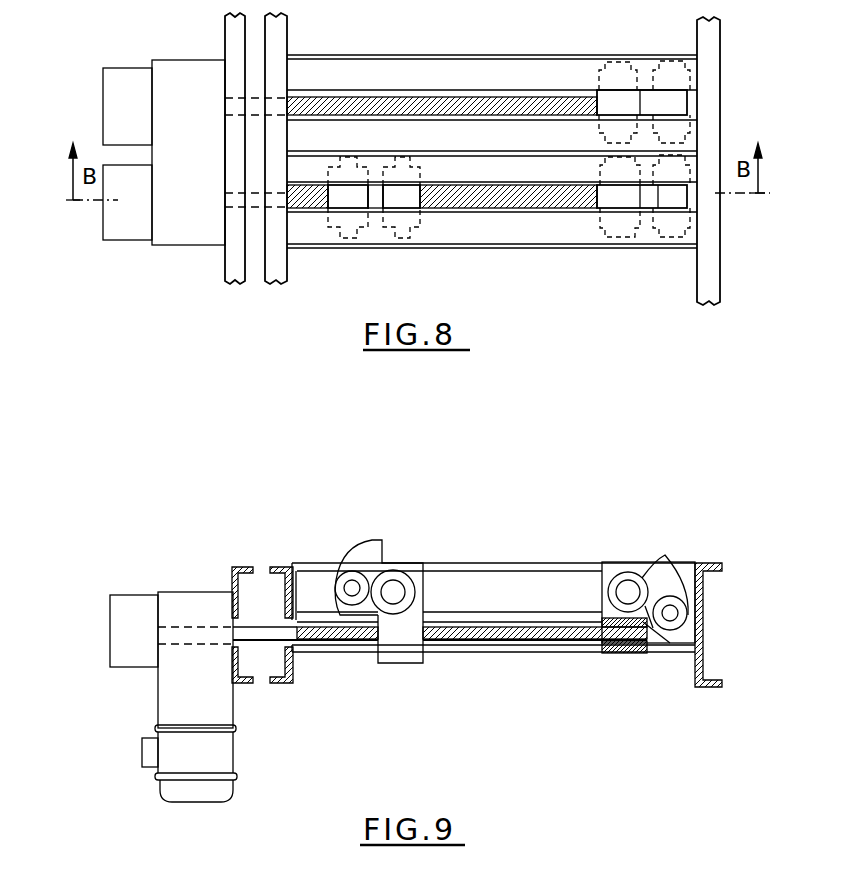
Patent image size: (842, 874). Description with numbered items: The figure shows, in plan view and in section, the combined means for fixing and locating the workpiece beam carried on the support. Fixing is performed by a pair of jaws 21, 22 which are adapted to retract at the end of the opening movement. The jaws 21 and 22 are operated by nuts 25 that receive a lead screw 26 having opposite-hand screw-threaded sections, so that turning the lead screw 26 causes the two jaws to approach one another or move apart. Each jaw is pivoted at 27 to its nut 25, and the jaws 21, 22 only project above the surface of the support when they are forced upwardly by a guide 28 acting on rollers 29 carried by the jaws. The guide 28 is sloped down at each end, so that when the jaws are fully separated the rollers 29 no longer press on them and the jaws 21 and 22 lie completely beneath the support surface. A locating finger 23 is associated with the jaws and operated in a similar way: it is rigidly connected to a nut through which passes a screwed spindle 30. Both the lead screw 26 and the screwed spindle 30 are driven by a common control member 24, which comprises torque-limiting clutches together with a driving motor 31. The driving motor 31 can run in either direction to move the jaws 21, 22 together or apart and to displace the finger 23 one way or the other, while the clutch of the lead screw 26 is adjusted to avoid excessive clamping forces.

In FIG. 8, the jaw 21 is at (366, 205).
In FIG. 9, the jaw 21 is at (372, 562).
In FIG. 8, the jaw 22 is at (648, 200).
In FIG. 9, the jaw 22 is at (655, 585).
In FIG. 8, the locating finger 23 is at (623, 100).
In FIG. 8, the control member 24 is at (183, 217).
In FIG. 9, the control member 24 is at (178, 613).
In FIG. 9, the nut 25 is at (632, 653).
In FIG. 8, the lead screw 26 is at (528, 202).
In FIG. 9, the lead screw 26 is at (557, 633).
In FIG. 8, the pivot 27 is at (401, 235).
In FIG. 9, the pivot 27 is at (388, 601).
In FIG. 9, the guide 28 is at (510, 615).
In FIG. 9, the roller 29 is at (343, 575).
In FIG. 8, the screwed spindle 30 is at (415, 106).
In FIG. 9, the driving motor 31 is at (205, 765).